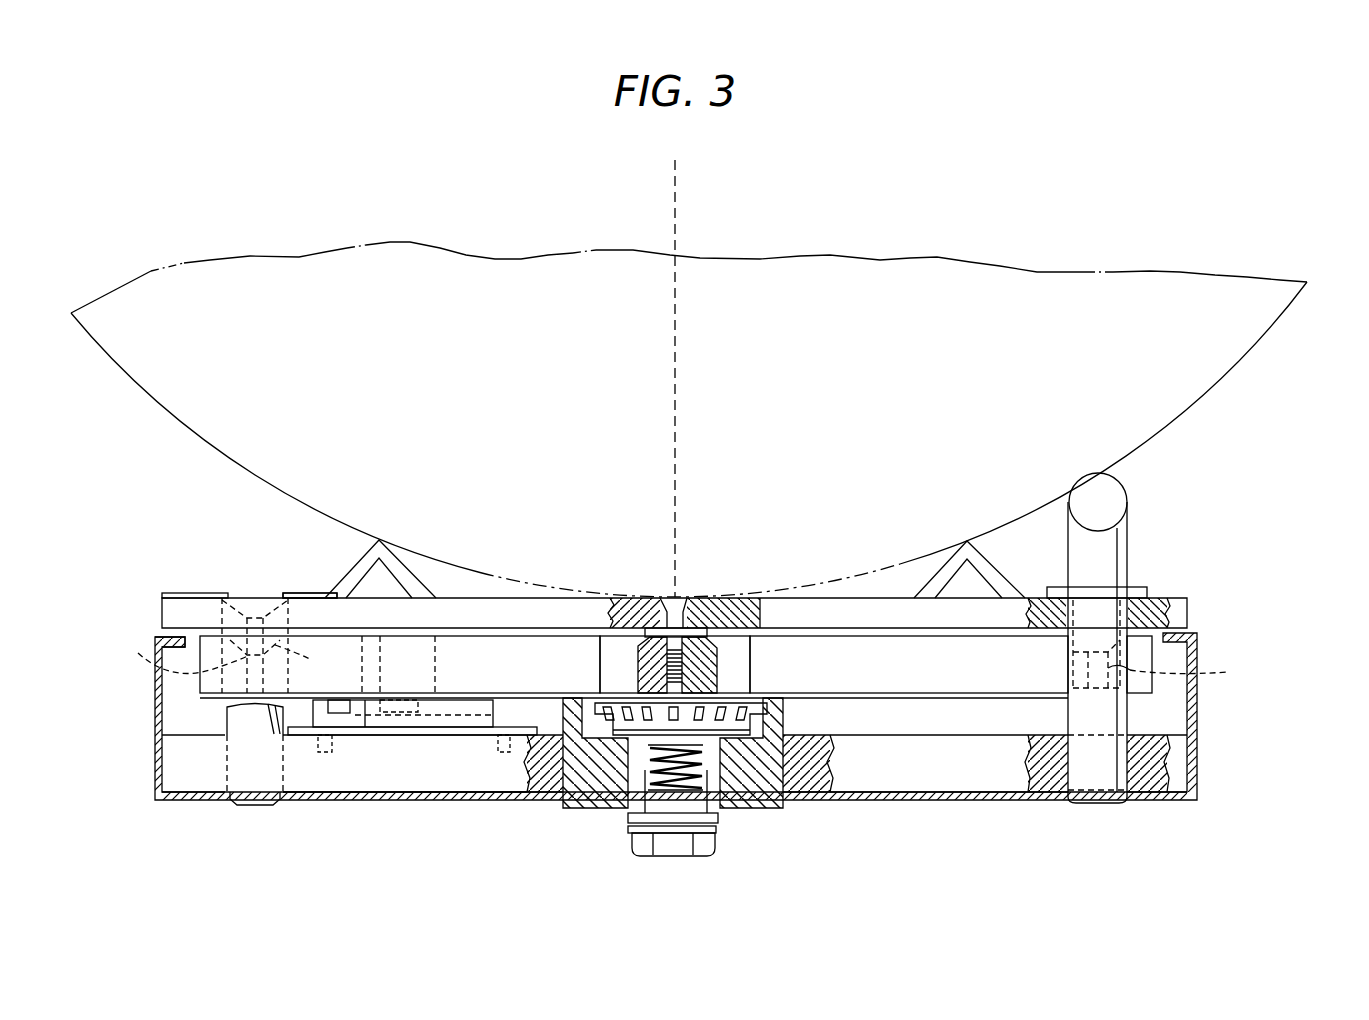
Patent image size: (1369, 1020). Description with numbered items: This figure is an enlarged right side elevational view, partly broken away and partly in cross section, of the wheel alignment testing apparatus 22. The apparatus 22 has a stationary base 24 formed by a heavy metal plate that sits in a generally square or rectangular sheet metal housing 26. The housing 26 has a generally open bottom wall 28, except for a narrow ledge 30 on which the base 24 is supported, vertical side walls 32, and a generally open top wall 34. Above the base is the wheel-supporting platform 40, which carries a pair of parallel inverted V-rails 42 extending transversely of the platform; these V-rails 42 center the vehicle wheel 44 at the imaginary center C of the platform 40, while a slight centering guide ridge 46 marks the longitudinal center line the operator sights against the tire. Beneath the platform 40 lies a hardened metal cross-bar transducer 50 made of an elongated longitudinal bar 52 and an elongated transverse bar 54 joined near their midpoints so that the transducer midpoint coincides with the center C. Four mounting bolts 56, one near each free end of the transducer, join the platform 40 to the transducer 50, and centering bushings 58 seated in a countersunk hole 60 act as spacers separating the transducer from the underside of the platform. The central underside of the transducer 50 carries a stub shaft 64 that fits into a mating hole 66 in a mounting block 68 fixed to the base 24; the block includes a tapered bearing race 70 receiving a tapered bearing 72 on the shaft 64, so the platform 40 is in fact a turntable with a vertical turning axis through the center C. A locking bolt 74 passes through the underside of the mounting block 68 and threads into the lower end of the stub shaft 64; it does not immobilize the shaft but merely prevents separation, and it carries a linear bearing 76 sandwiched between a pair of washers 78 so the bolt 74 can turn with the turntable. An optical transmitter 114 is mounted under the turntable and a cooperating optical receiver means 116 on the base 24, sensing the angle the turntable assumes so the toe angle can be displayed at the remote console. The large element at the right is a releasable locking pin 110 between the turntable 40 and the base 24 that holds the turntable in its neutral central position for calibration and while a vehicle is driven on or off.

The testing apparatus 22 is at (130, 568).
The stationary base 24 is at (376, 780).
The sheet metal housing 26 is at (669, 726).
The bottom wall 28 is at (440, 793).
The narrow ledge 30 is at (190, 795).
The vertical side walls 32 is at (157, 727).
The top wall 34 is at (195, 640).
The wheel-supporting platform 40 is at (185, 597).
The inverted V-rails 42 is at (367, 557).
The vehicle wheel 44 is at (1255, 368).
The centering guide ridge 46 is at (305, 596).
The cross-bar transducer 50 is at (968, 673).
The longitudinal bar 52 is at (490, 657).
The transverse bar 54 is at (751, 672).
The mounting bolts 56 is at (665, 598).
The centering bushings 58 is at (290, 634).
The countersunk hole 60 is at (307, 660).
The stub shaft 64 is at (757, 789).
The mating hole 66 is at (632, 752).
The mounting block 68 is at (606, 803).
The tapered bearing race 70 is at (762, 728).
The tapered bearing 72 is at (627, 712).
The locking bolt 74 is at (676, 856).
The linear bearing 76 is at (626, 823).
The washers 78 is at (722, 831).
The releasable locking pins 110 is at (250, 806).
The optical transmitter 114 is at (437, 697).
The optical receiver means 116 is at (466, 705).
The imaginary center C is at (682, 597).